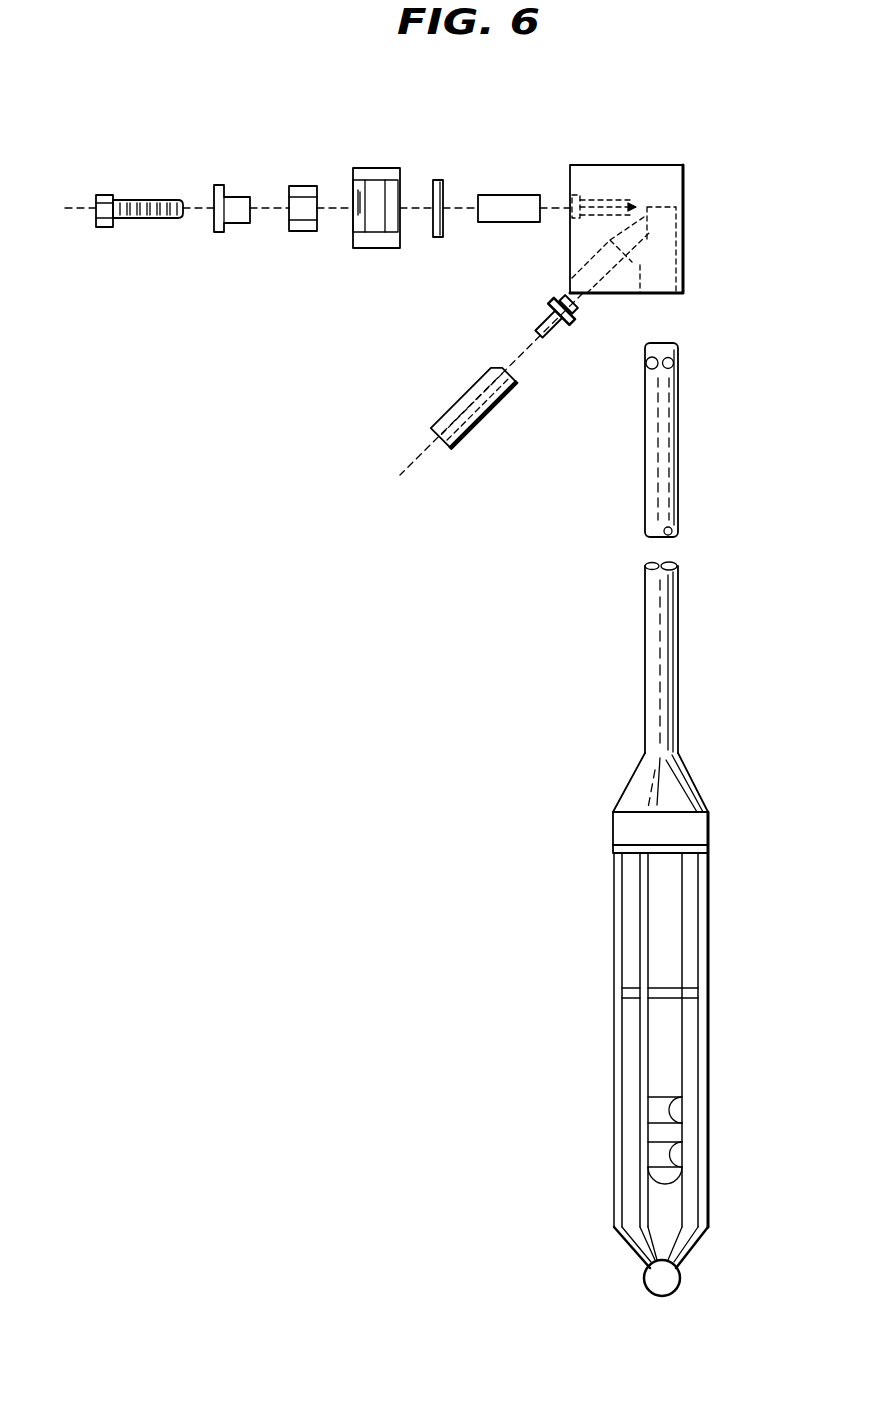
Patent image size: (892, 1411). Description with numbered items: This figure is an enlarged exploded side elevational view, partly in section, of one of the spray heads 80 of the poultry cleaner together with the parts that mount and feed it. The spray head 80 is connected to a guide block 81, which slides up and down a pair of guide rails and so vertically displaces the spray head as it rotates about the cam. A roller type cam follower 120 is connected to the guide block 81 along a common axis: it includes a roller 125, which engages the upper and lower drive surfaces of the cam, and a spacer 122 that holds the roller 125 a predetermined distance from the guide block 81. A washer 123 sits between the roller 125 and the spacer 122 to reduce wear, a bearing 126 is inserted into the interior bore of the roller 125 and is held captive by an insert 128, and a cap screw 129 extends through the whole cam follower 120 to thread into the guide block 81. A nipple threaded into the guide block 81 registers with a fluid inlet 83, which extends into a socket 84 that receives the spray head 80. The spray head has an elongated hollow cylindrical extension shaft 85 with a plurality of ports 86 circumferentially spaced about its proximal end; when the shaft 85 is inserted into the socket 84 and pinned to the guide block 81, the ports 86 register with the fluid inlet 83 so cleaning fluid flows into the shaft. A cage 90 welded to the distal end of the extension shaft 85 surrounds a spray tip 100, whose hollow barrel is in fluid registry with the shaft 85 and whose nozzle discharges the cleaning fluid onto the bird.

The cam follower 120 is at (560, 158).
The cap screw 129 is at (140, 220).
The insert 128 is at (218, 232).
The bearing 126 is at (304, 232).
The roller 125 is at (379, 247).
The washer 123 is at (443, 234).
The spacer 122 is at (513, 223).
The guide block 81 is at (672, 185).
The fluid inlet 83 is at (640, 240).
The socket 84 is at (665, 266).
The ports 86 is at (672, 360).
The extension shaft 85 is at (665, 441).
The spray head 80 is at (628, 620).
The cage 90 is at (705, 1011).
The spray tip 100 is at (675, 1066).